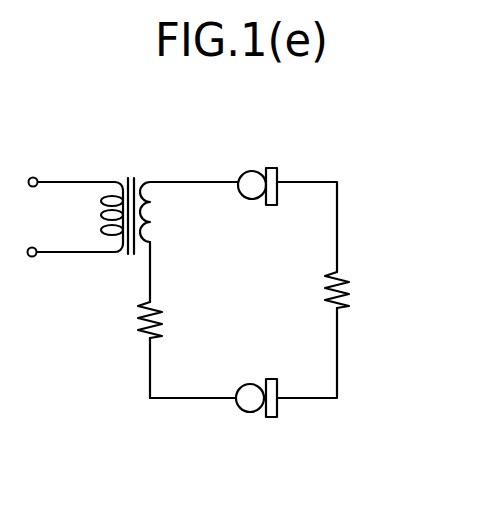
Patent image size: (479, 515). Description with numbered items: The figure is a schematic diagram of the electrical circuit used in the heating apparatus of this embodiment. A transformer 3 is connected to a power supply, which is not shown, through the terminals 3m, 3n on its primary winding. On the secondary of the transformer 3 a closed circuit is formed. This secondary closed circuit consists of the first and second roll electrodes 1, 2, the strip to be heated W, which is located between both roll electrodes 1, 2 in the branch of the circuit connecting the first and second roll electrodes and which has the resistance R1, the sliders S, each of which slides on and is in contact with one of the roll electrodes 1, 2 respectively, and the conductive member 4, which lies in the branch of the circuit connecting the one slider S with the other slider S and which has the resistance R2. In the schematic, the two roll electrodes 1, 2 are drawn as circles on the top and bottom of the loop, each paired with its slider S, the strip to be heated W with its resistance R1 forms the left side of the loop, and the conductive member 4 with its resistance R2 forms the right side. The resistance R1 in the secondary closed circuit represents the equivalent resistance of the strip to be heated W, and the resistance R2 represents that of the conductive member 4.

The transformer 3 is at (141, 167).
The terminal 3m is at (38, 180).
The terminal 3n is at (29, 258).
The first roll electrode 1 is at (245, 172).
The second roll electrode 2 is at (242, 410).
The slider S is at (278, 170).
The conductive member 4 is at (339, 227).
The resistance of the strip to be heated R1 is at (126, 323).
The resistance of the conductive member R2 is at (358, 292).
The strip to be heated W is at (148, 373).